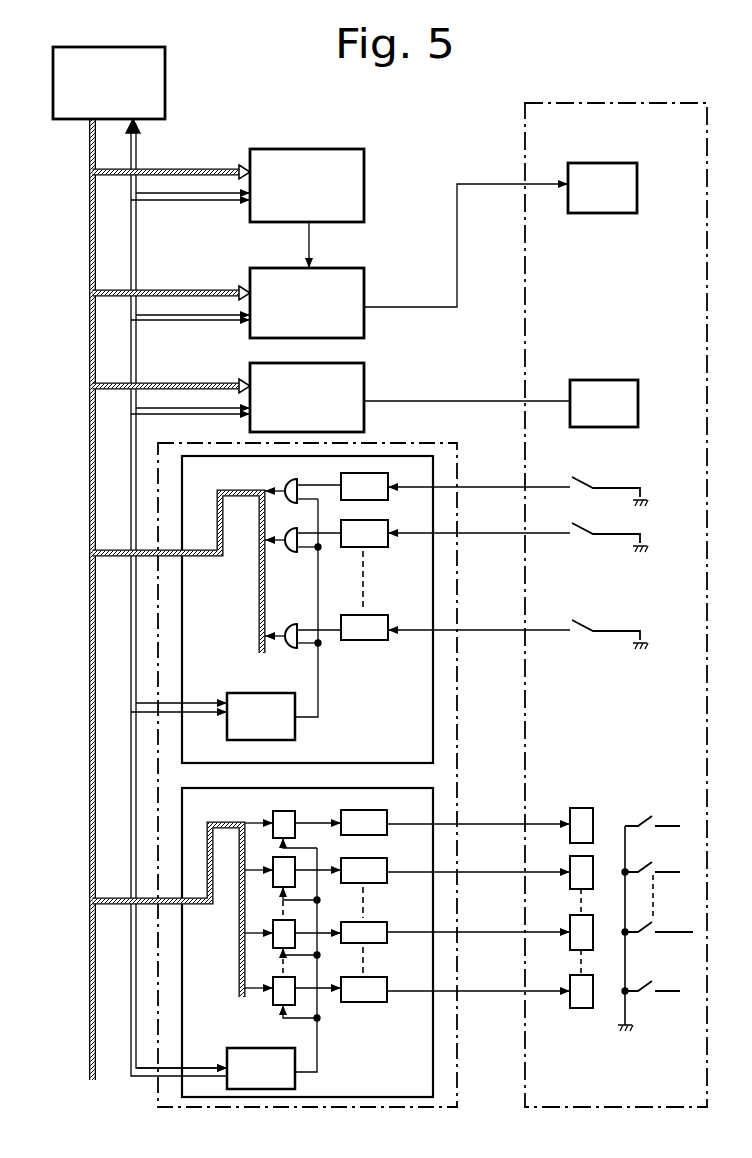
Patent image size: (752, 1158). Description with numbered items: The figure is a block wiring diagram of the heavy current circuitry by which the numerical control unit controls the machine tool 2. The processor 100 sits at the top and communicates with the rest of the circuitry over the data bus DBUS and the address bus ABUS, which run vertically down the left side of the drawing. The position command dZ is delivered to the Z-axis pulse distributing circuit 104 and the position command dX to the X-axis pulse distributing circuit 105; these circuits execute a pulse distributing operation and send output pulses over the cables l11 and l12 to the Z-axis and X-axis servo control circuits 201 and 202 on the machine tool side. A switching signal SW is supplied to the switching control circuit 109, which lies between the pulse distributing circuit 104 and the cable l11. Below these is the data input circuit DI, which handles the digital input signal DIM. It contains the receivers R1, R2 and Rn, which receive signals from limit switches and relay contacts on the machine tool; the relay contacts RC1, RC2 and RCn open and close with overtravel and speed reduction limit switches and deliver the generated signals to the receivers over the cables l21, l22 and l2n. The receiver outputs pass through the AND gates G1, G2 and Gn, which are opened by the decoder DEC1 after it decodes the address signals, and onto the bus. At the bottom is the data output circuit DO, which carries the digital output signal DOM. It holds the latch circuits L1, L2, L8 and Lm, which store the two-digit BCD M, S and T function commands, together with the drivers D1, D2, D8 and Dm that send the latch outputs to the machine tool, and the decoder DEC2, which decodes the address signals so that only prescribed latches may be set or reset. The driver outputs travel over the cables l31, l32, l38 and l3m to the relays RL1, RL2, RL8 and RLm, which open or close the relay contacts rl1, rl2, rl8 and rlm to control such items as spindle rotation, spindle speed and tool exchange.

The processor 100 is at (155, 86).
The Z-axis pulse distributing circuit 104 is at (318, 159).
The switching control circuit 109 is at (320, 278).
The X-axis pulse distributing circuit 105 is at (320, 373).
The machine tool 2 is at (617, 112).
The Z-axis servo control circuit 201 is at (593, 173).
The X-axis servo control circuit 202 is at (600, 392).
The cable l11 is at (477, 184).
The cable l12 is at (482, 401).
The cable l21 is at (480, 490).
The cable l22 is at (485, 535).
The cable l2n is at (480, 630).
The cable l31 is at (485, 824).
The cable l32 is at (480, 872).
The cable l38 is at (485, 932).
The cable l3m is at (483, 991).
The AND gate G1 is at (289, 482).
The AND gate G2 is at (296, 531).
The AND gate Gn is at (296, 618).
The receiver R1 is at (367, 482).
The receiver R2 is at (367, 528).
The receiver Rn is at (367, 622).
The relay contact RC1 is at (610, 481).
The relay contact RC2 is at (610, 529).
The relay contact RCn is at (610, 622).
The decoder DEC1 is at (285, 727).
The data input circuit DI is at (422, 733).
The digital input signal DIM is at (178, 573).
The decoder DEC2 is at (285, 1076).
The data output circuit DO is at (422, 1071).
The digital output signal DOM is at (168, 911).
The latch circuit L1 is at (283, 822).
The latch circuit L2 is at (282, 866).
The latch circuit L8 is at (282, 930).
The latch circuit Lm is at (283, 986).
The driver D1 is at (363, 820).
The driver D2 is at (365, 868).
The driver D8 is at (365, 930).
The driver Dm is at (365, 985).
The relay RL1 is at (583, 820).
The relay RL2 is at (583, 872).
The relay RL8 is at (583, 932).
The relay RLm is at (583, 992).
The relay contact rl1 is at (652, 809).
The relay contact rl2 is at (652, 858).
The relay contact rl8 is at (659, 917).
The relay contact rlm is at (653, 972).
The data bus DBUS is at (92, 944).
The address bus ABUS is at (130, 989).
The Z-axis position command dZ is at (172, 164).
The switching signal SW is at (172, 284).
The X-axis position command dX is at (172, 378).